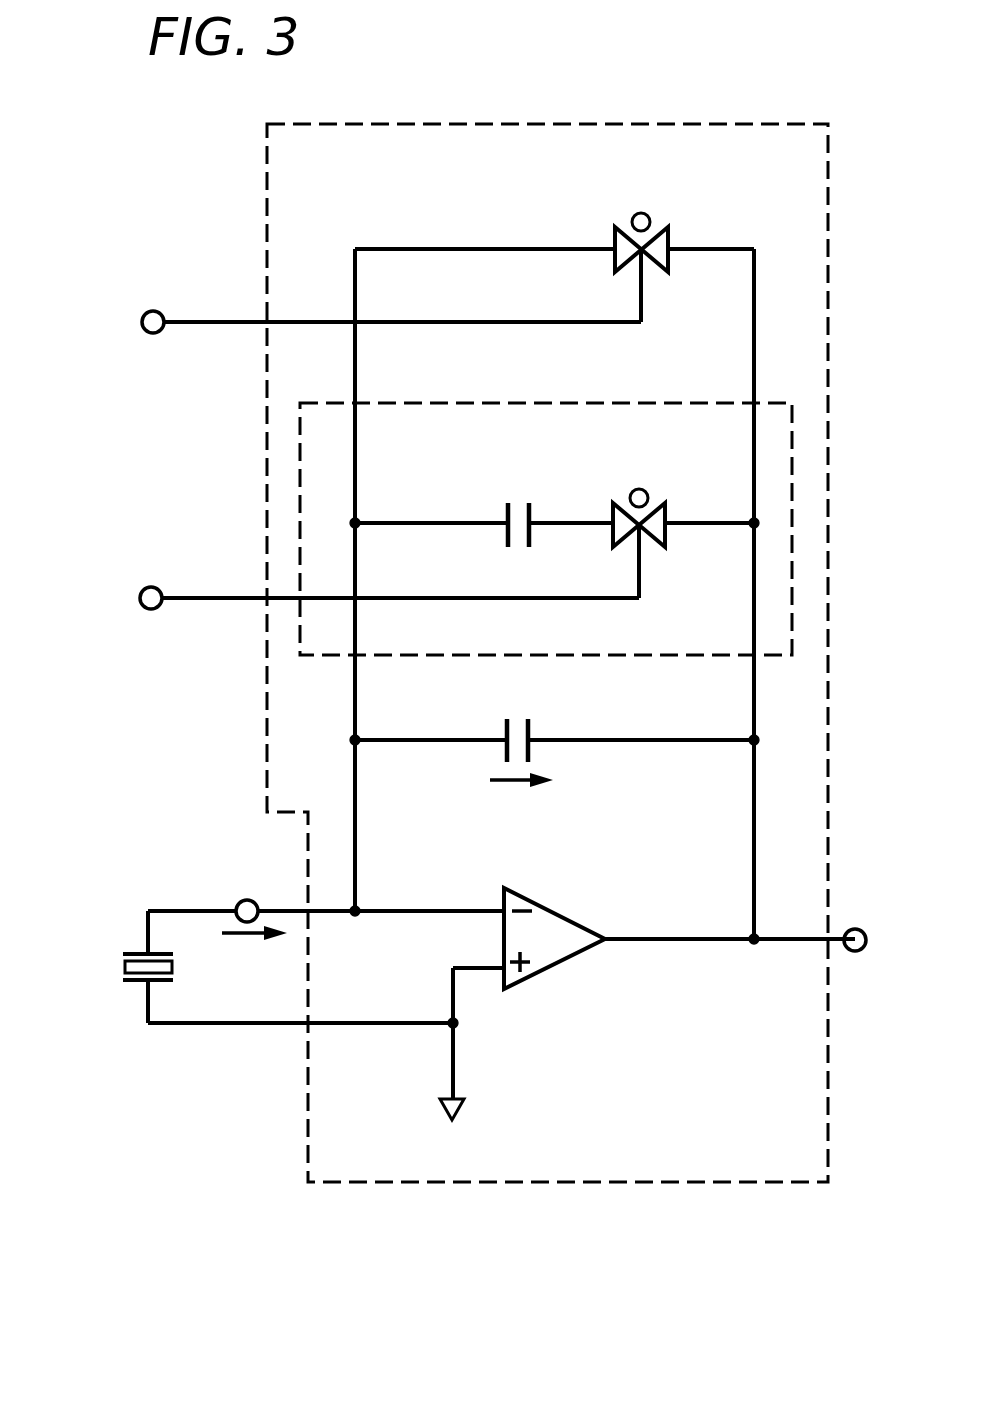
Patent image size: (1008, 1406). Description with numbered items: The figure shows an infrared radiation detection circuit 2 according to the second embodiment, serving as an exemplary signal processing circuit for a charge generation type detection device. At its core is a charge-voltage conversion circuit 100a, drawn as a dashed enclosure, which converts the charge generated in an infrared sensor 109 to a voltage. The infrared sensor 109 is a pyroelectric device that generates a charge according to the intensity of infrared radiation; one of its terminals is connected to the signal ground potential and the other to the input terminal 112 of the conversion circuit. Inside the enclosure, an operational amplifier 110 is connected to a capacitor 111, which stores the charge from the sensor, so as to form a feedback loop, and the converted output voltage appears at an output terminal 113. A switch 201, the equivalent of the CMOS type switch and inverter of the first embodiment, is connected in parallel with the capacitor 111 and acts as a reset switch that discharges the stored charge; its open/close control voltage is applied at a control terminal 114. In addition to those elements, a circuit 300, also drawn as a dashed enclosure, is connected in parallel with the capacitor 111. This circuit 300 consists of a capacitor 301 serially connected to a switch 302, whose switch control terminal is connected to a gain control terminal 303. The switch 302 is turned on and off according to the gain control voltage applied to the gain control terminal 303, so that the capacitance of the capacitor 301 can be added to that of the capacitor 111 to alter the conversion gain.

The charge-voltage conversion circuit 100a is at (385, 126).
The switch 201 is at (633, 214).
The control terminal 114 is at (150, 310).
The circuit 300 is at (792, 490).
The capacitor 301 is at (508, 508).
The switch 302 is at (631, 490).
The gain control terminal 303 is at (150, 586).
The capacitor 111 is at (507, 723).
The input terminal 112 is at (238, 902).
The infrared sensor 109 is at (125, 966).
The operational amplifier 110 is at (565, 958).
The output terminal 113 is at (858, 928).
The infrared radiation detection circuit 2 is at (586, 1240).